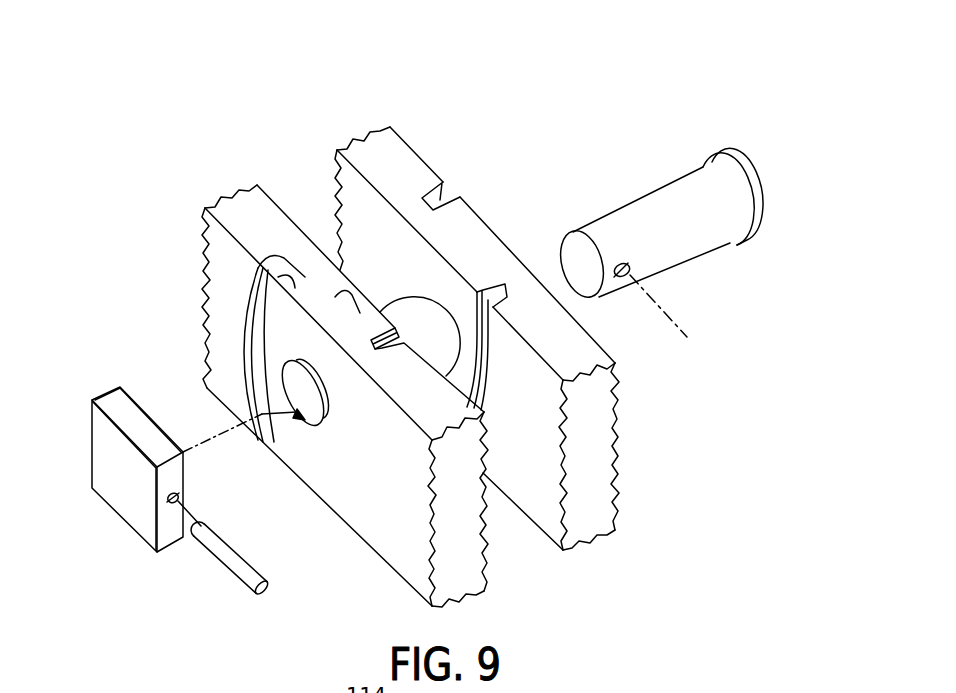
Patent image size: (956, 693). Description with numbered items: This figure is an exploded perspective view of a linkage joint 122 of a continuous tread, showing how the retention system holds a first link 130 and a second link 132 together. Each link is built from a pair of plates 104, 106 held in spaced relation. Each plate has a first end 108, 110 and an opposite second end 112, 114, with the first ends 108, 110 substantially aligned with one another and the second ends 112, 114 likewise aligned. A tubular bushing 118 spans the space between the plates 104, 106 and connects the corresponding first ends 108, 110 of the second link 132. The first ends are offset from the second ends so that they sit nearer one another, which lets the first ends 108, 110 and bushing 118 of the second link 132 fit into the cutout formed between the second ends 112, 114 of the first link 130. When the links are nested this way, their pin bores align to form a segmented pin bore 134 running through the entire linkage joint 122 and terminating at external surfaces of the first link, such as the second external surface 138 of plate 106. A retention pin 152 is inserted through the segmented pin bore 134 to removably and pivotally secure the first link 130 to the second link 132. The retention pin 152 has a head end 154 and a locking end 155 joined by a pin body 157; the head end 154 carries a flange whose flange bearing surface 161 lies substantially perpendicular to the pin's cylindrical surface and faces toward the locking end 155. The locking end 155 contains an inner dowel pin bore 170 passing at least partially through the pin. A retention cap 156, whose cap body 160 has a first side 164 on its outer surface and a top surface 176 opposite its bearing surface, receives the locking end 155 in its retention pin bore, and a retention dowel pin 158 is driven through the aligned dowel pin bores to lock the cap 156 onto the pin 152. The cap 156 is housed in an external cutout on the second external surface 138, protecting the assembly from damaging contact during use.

The plate 104 is at (393, 160).
The plate 106 is at (238, 218).
The first end 108 is at (438, 230).
The first end 110 is at (335, 297).
The second end 112 is at (486, 240).
The second end 114 is at (258, 268).
The bushing 118 is at (417, 317).
The linkage joint 122 is at (525, 117).
The first link 130 is at (632, 513).
The second link 132 is at (326, 180).
The segmented pin bore 134 is at (277, 431).
The second external surface 138 is at (272, 377).
The retention pin 152 is at (643, 222).
The head end 154 is at (760, 195).
The locking end 155 is at (592, 283).
The retention cap 156 is at (123, 478).
The pin body 157 is at (688, 249).
The retention dowel pin 158 is at (240, 563).
The cap body 160 is at (123, 410).
The flange bearing surface 161 is at (703, 167).
The first side 164 is at (170, 530).
The inner dowel pin bore 170 is at (636, 274).
The top surface 176 is at (117, 460).